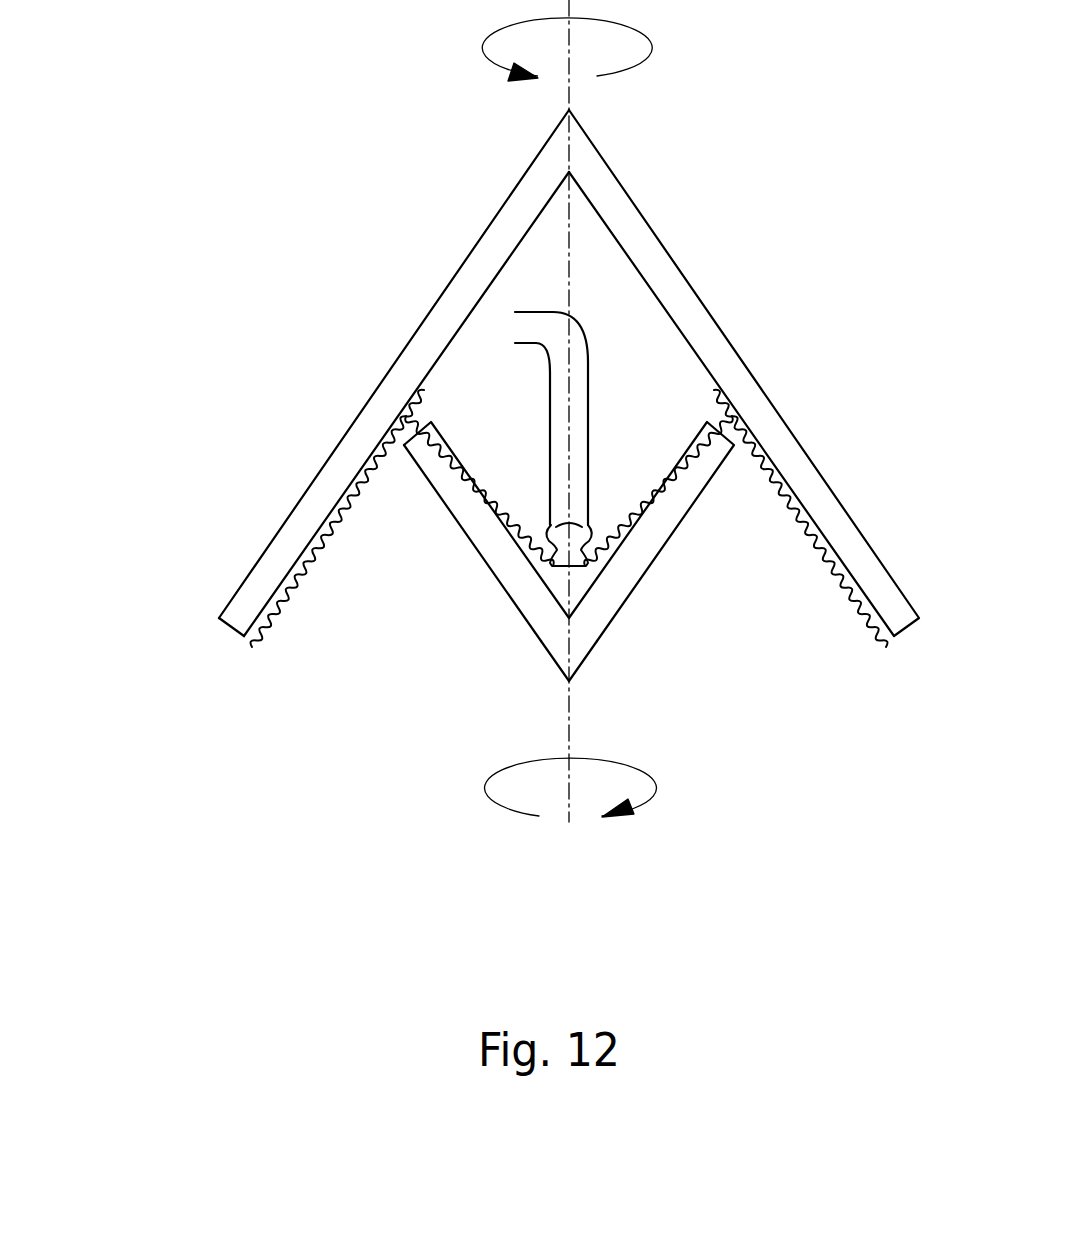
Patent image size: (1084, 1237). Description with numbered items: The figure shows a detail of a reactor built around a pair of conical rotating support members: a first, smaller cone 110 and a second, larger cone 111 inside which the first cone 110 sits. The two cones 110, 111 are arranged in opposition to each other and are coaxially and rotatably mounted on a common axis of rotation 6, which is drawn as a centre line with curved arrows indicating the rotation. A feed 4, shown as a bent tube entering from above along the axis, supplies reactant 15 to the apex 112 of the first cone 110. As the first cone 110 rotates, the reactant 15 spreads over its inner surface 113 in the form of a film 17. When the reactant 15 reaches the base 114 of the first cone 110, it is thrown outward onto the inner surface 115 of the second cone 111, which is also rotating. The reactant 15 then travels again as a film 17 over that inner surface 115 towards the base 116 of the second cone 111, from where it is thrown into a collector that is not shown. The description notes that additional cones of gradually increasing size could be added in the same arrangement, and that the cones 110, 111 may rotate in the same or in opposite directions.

The feed 4 is at (588, 418).
The axis of rotation 6 is at (569, 98).
The reactant 15 is at (563, 560).
The film 17 is at (495, 503).
The first cone 110 is at (625, 595).
The second cone 111 is at (790, 432).
The apex 112 is at (577, 665).
The inner surface 113 is at (640, 520).
The base 114 is at (430, 425).
The inner surface 115 is at (365, 462).
The base 116 is at (222, 632).